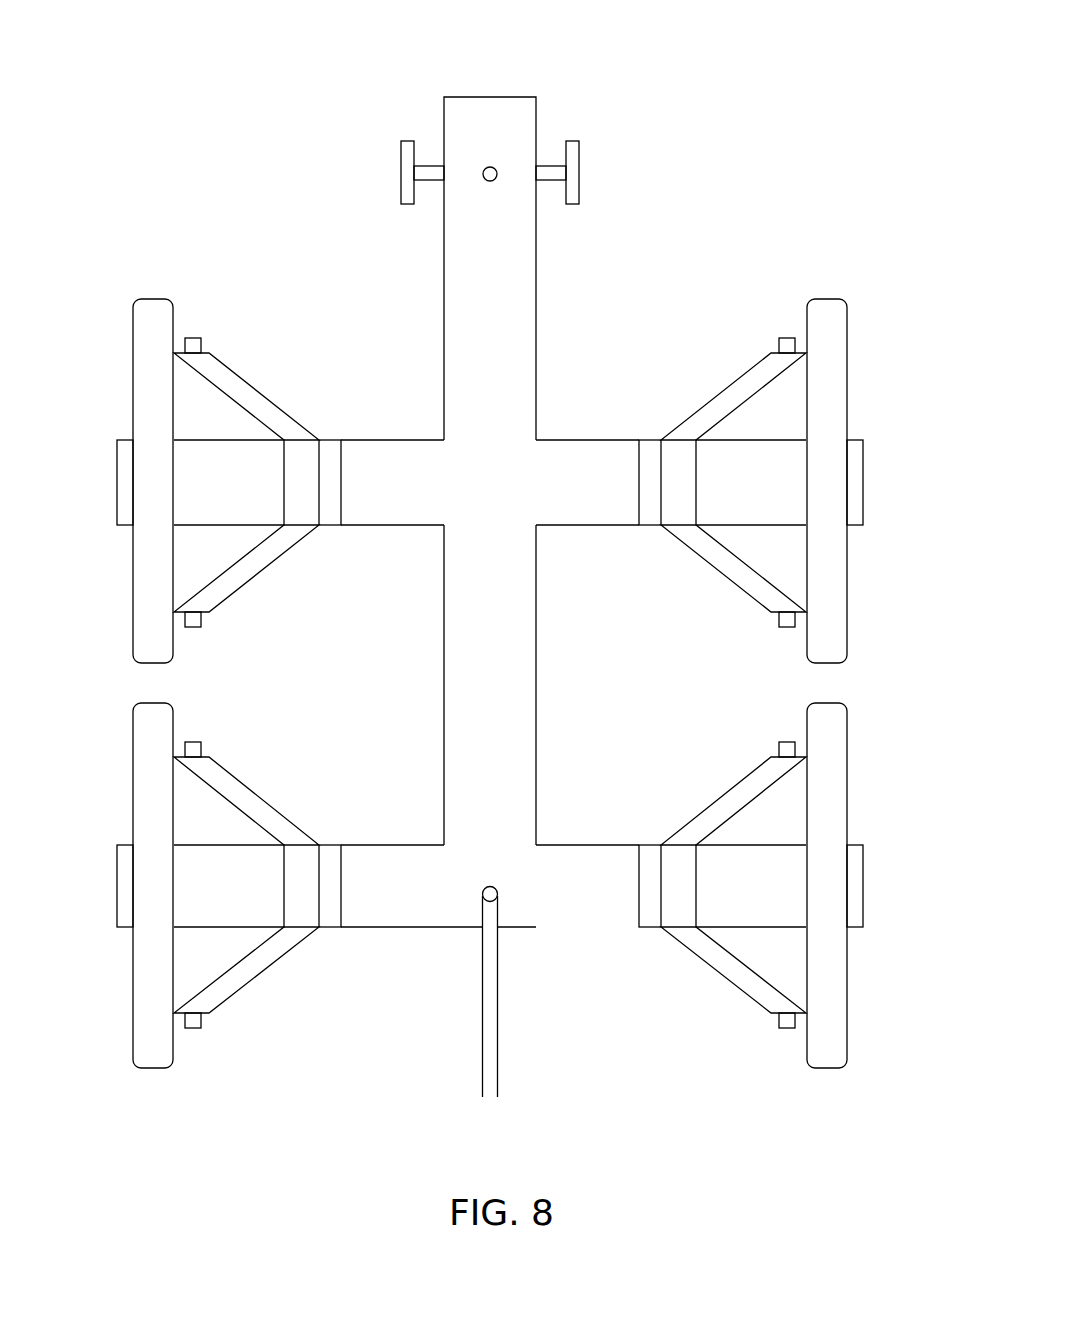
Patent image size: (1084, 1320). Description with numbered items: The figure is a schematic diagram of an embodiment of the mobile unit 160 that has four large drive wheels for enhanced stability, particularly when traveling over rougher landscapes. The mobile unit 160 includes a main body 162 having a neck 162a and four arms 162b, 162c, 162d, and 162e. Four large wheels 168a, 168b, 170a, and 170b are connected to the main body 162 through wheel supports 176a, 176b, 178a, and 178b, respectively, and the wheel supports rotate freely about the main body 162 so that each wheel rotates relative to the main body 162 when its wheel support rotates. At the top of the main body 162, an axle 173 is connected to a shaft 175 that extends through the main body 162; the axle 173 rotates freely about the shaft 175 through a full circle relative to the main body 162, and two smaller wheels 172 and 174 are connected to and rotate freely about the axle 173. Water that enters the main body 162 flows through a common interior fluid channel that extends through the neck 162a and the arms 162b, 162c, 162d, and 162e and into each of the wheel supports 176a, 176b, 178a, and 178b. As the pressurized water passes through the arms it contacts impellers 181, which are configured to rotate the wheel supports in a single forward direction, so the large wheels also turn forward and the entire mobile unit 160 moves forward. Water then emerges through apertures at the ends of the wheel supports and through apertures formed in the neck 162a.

The mobile unit 160 is at (798, 84).
The main body 162 is at (522, 706).
The neck 162a is at (520, 258).
The arm 162b is at (417, 914).
The arm 162c is at (573, 535).
The arm 162d is at (401, 457).
The arm 162e is at (573, 460).
The large wheel 168a is at (142, 740).
The large wheel 168b is at (140, 334).
The large wheel 170a is at (828, 752).
The large wheel 170b is at (830, 347).
The wheel 172 is at (408, 157).
The axle 173 is at (430, 172).
The wheel 174 is at (573, 156).
The shaft 175 is at (495, 168).
The wheel support 176a is at (290, 816).
The wheel support 176b is at (290, 416).
The wheel support 178a is at (690, 820).
The wheel support 178b is at (690, 418).
The impeller 181 is at (332, 513).